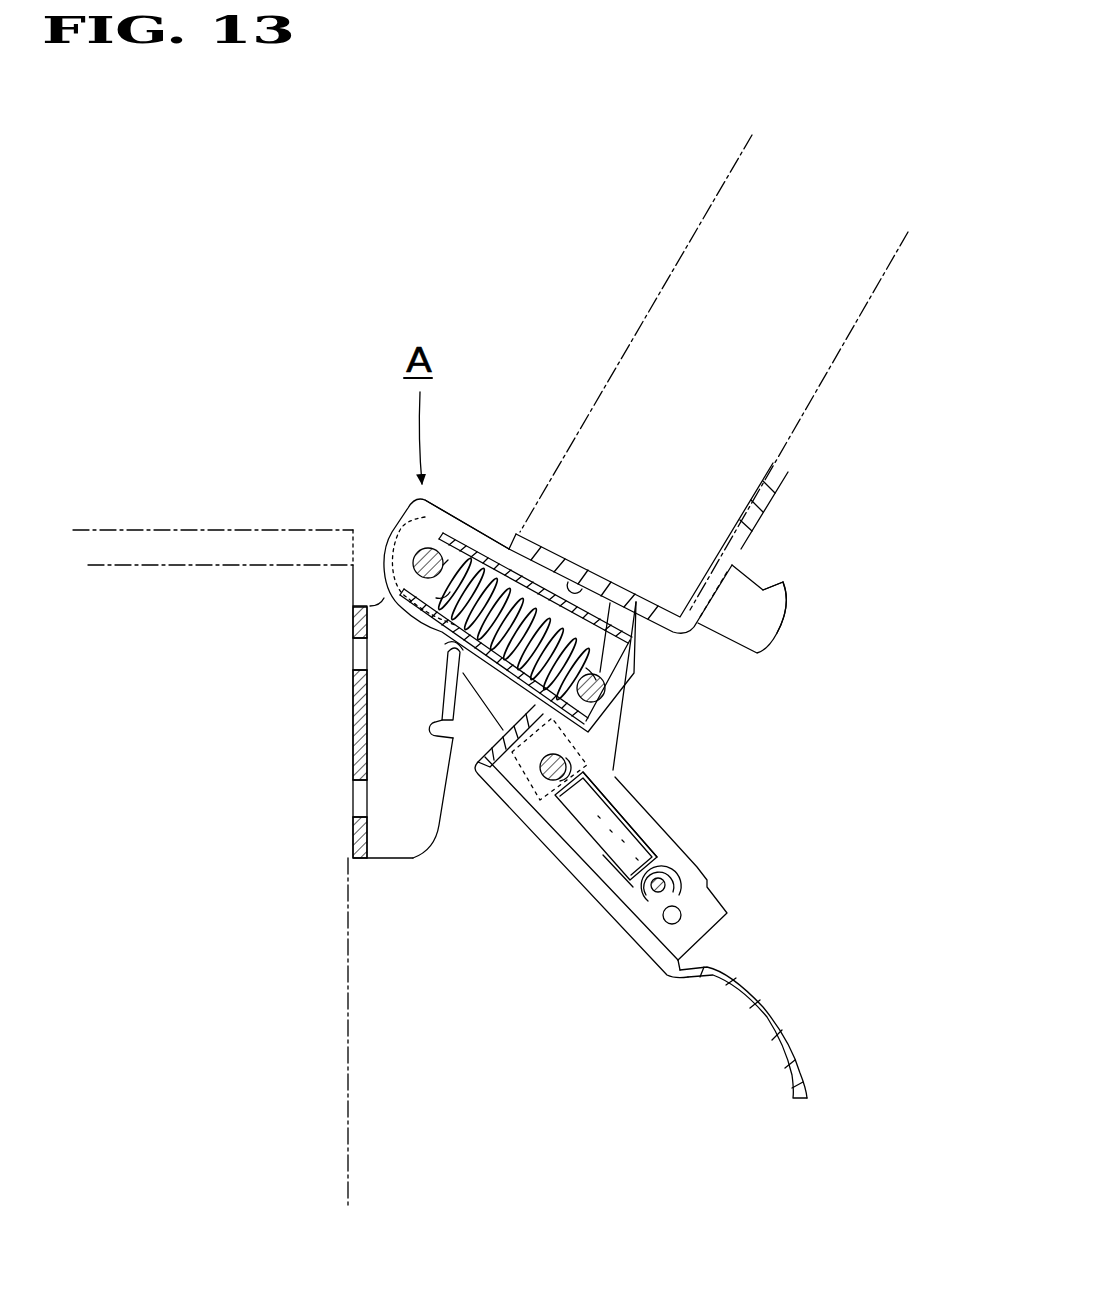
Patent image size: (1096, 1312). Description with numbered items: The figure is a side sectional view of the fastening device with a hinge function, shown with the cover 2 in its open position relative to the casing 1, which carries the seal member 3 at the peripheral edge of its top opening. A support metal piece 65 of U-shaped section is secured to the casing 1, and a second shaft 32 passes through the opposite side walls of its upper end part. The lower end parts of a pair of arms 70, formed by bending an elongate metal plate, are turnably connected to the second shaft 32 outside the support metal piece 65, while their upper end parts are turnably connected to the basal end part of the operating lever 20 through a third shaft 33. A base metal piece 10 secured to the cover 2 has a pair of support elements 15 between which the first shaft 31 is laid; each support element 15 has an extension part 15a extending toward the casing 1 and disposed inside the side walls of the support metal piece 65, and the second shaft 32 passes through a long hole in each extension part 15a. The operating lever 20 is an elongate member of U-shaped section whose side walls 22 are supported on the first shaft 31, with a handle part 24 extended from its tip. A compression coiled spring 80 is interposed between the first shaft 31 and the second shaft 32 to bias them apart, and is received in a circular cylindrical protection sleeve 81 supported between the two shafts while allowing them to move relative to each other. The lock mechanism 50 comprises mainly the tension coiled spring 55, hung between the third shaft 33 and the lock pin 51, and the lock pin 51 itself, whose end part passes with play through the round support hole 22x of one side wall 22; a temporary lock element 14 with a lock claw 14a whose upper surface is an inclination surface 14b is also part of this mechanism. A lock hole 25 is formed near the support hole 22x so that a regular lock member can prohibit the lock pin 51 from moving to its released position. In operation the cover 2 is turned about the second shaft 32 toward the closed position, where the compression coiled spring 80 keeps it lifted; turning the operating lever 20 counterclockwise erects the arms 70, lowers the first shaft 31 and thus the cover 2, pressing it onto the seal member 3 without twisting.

The casing 1 is at (330, 1117).
The cover 2 is at (862, 312).
The seal member 3 is at (208, 532).
The base metal piece 10 is at (781, 489).
The temporary lock element 14 is at (770, 640).
The lock claw 14a is at (785, 577).
The inclination surface 14b is at (780, 607).
The support elements 15 is at (640, 648).
The extension part 15a is at (463, 532).
The operating lever 20 is at (660, 978).
The side walls 22 is at (718, 913).
The support hole 22x is at (673, 882).
The handle part 24 is at (773, 1027).
The lock hole 25 is at (680, 918).
The first shaft 31 is at (606, 688).
The second shaft 32 is at (420, 550).
The third shaft 33 is at (566, 767).
The lock mechanism 50 is at (612, 893).
The lock pin 51 is at (603, 860).
The tension coiled spring 55 is at (642, 833).
The support metal piece 65 is at (412, 847).
The arms 70 is at (487, 706).
The compression coiled spring 80 is at (520, 590).
The protection sleeve 81 is at (500, 548).